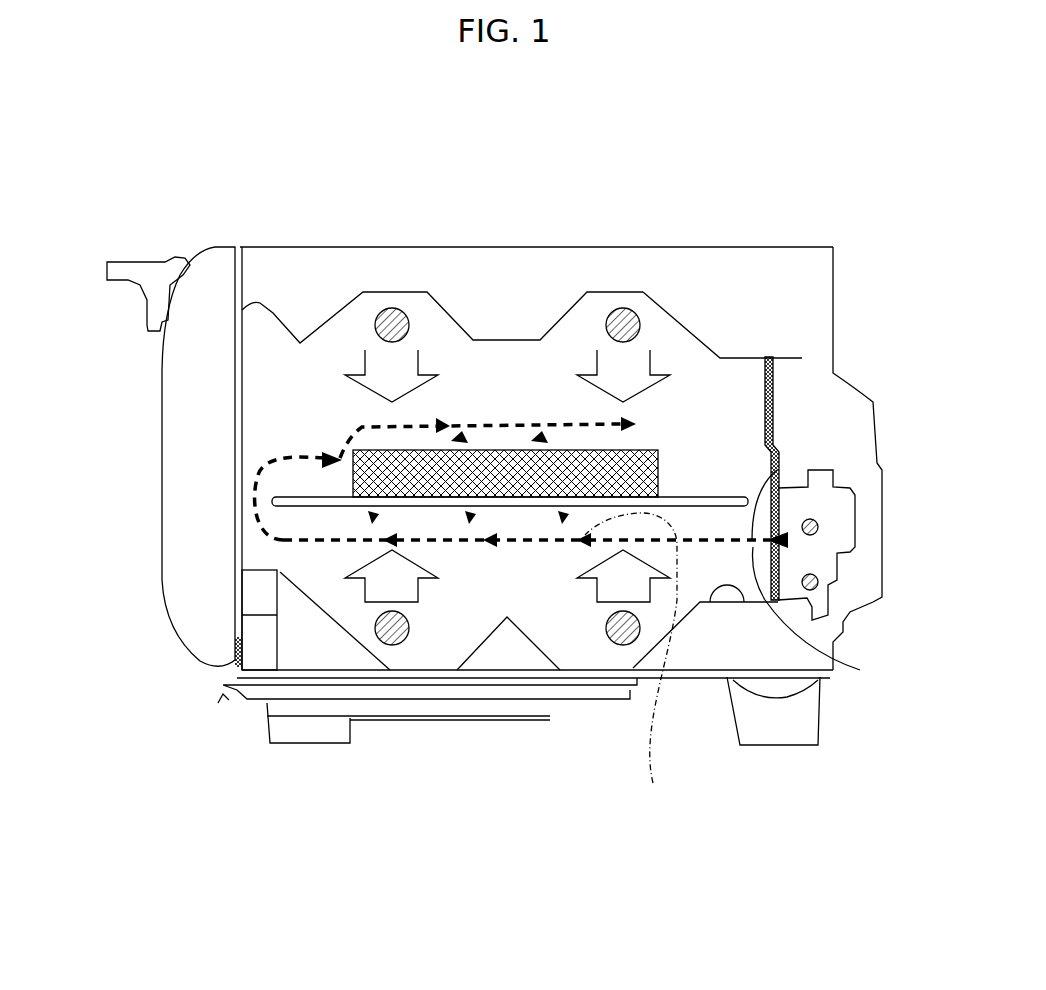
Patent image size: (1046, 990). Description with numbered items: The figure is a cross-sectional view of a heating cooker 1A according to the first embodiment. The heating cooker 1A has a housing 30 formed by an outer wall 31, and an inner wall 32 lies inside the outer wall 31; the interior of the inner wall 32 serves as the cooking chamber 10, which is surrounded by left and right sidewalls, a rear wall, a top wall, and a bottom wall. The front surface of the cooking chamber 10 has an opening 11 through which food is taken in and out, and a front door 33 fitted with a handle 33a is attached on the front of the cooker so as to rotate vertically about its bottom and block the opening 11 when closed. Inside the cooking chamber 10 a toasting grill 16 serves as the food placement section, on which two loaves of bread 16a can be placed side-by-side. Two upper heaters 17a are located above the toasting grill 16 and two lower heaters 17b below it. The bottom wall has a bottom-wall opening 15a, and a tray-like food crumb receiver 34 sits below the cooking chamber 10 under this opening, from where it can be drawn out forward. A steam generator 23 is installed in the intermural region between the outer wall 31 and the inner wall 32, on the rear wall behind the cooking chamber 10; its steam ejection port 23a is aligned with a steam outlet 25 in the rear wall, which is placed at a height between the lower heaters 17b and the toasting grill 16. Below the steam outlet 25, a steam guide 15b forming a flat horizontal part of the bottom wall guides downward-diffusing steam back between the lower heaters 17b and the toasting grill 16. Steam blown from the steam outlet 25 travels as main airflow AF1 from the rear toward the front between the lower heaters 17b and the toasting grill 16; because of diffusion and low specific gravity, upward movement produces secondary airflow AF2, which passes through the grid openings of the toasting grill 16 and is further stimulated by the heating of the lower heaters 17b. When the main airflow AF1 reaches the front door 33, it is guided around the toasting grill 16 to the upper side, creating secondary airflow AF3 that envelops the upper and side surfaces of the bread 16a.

The heating cooker 1A is at (856, 189).
The cooking chamber 10 is at (290, 373).
The opening 11 is at (247, 370).
The bottom-wall opening 15a is at (407, 652).
The steam guide 15b is at (748, 590).
The toasting grill 16 is at (700, 497).
The bread 16a is at (658, 467).
The upper heaters 17a is at (390, 307).
The lower heaters 17b is at (397, 640).
The steam generator 23 is at (840, 514).
The steam ejection port 23a is at (860, 670).
The steam outlet 25 is at (777, 472).
The housing 30 is at (643, 242).
The outer wall 31 is at (723, 247).
The inner wall 32 is at (697, 333).
The front door 33 is at (208, 245).
The handle 33a is at (130, 290).
The food crumb receiver 34 is at (313, 693).
The main airflow AF1 is at (273, 530).
The secondary airflow AF2 is at (631, 664).
The secondary airflow AF3 is at (283, 457).